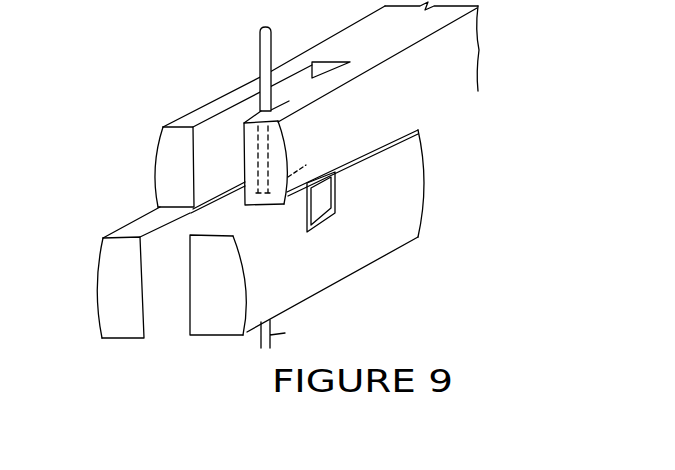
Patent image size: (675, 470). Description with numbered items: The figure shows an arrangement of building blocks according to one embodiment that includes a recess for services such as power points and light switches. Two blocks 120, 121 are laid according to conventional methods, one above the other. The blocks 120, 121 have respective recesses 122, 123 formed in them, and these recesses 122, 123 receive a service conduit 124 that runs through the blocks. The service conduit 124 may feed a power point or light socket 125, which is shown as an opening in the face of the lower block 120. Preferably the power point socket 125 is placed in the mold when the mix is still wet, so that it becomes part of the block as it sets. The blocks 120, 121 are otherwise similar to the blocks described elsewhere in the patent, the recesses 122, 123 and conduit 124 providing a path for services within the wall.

The block 120 is at (420, 215).
The block 121 is at (432, 101).
The recess 122 is at (180, 330).
The recess 123 is at (218, 166).
The service conduit 124 is at (258, 60).
The power point or light socket 125 is at (337, 215).